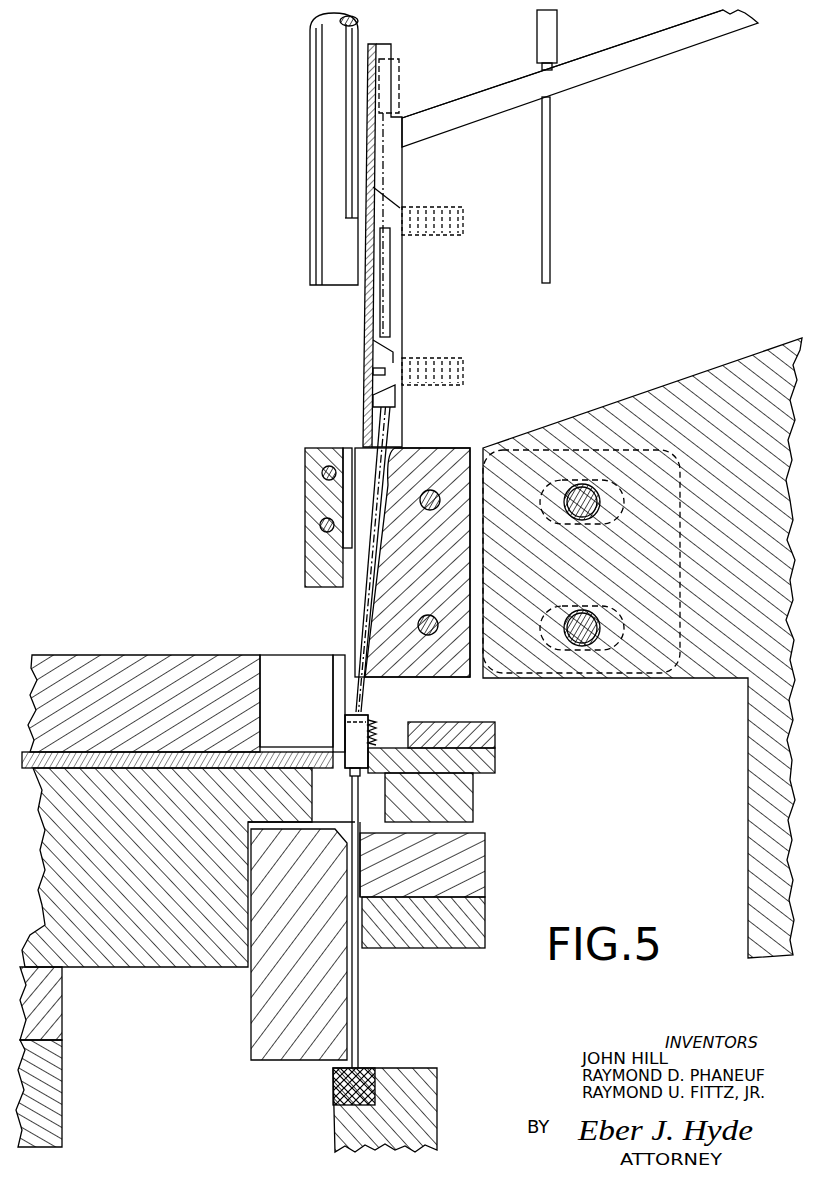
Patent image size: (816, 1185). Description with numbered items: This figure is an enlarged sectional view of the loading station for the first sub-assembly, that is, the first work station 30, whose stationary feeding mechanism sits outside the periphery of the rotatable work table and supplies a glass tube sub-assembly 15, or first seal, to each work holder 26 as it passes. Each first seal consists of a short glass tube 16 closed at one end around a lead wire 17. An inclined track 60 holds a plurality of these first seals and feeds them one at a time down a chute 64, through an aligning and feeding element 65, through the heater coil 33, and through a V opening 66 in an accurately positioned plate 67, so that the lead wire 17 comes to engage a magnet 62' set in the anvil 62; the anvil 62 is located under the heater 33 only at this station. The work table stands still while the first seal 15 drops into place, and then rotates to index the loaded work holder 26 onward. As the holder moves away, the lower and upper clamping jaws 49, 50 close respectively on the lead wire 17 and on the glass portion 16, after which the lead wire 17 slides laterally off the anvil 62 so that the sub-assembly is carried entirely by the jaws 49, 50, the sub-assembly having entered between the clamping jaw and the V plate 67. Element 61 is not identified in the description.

The glass tube sub-assembly 15 is at (558, 33).
The glass tube 16 is at (352, 774).
The lead wire 17 is at (358, 985).
The work holder 26 is at (172, 657).
The first work station 30 is at (495, 113).
The heater coil 33 is at (372, 726).
The lower clamping jaw 49 is at (482, 880).
The upper clamping jaw 50 is at (490, 766).
The inclined track 60 is at (676, 48).
The blade arm 61 is at (365, 335).
The anvil 62 is at (403, 1110).
The magnet 62' is at (363, 1061).
The chute 64 is at (398, 284).
The aligning and feeding element 65 is at (447, 455).
The V opening 66 is at (343, 758).
The plate 67 is at (281, 752).